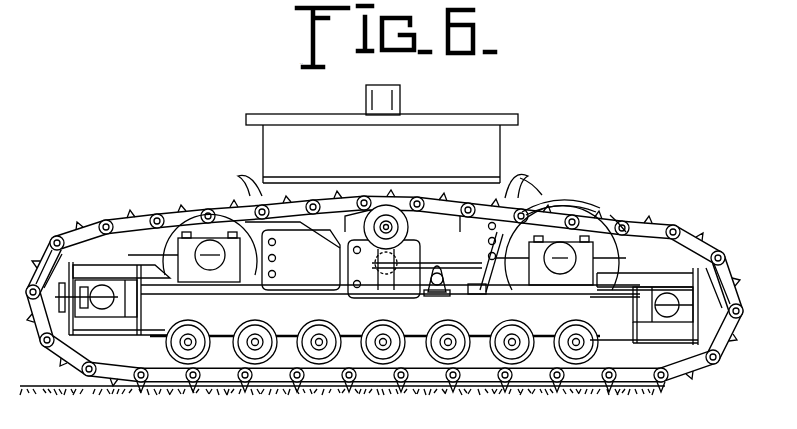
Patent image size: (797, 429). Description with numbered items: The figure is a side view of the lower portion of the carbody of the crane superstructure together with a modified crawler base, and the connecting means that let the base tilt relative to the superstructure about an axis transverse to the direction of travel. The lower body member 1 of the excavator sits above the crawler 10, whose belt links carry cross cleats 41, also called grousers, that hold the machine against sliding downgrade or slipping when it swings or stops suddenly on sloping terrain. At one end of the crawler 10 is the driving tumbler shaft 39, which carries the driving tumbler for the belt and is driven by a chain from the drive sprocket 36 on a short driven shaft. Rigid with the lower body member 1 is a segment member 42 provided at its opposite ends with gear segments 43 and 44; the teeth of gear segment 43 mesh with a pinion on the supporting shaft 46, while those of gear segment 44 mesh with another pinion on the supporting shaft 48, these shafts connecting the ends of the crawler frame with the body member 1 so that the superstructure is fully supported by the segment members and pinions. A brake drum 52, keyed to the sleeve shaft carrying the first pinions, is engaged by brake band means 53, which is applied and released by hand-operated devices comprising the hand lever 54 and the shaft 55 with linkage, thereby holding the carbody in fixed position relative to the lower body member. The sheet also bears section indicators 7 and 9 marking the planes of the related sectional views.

The lower body member 1 is at (490, 145).
The segment member 42 is at (322, 213).
The gear segment 44 is at (243, 182).
The gear segment 43 is at (517, 192).
The crawler 10 is at (118, 370).
The cross cleats 41 is at (195, 390).
The main frame beam / section line 9 is at (288, 326).
The driving tumbler shaft 39 is at (116, 300).
The supporting shaft 48 is at (208, 250).
The drive sprocket 36 is at (350, 250).
The hand lever 54 is at (420, 264).
The shaft 55 is at (434, 286).
The supporting shaft 46 is at (562, 250).
The brake band means 53 is at (566, 203).
The brake drum 52 is at (612, 214).
The section line 7 is at (22, 294).